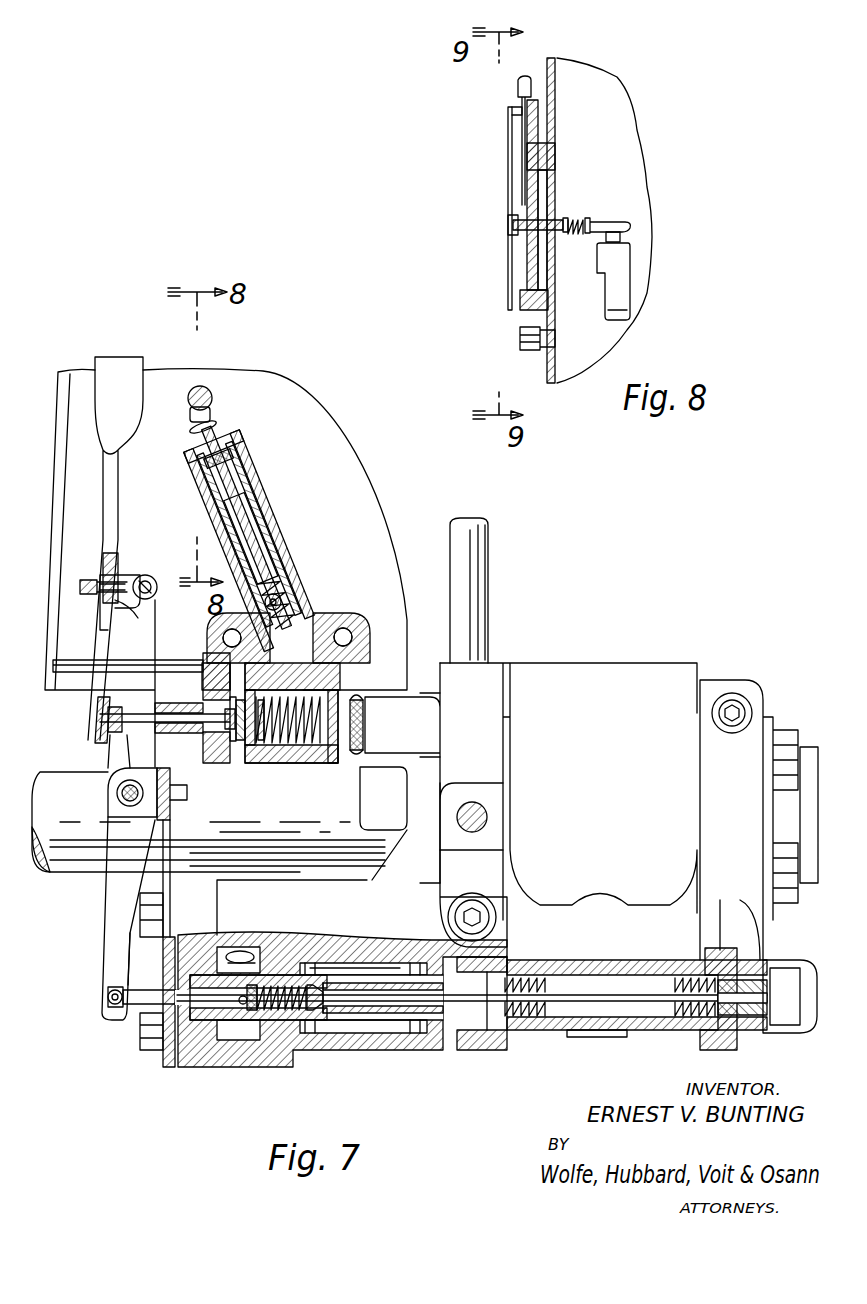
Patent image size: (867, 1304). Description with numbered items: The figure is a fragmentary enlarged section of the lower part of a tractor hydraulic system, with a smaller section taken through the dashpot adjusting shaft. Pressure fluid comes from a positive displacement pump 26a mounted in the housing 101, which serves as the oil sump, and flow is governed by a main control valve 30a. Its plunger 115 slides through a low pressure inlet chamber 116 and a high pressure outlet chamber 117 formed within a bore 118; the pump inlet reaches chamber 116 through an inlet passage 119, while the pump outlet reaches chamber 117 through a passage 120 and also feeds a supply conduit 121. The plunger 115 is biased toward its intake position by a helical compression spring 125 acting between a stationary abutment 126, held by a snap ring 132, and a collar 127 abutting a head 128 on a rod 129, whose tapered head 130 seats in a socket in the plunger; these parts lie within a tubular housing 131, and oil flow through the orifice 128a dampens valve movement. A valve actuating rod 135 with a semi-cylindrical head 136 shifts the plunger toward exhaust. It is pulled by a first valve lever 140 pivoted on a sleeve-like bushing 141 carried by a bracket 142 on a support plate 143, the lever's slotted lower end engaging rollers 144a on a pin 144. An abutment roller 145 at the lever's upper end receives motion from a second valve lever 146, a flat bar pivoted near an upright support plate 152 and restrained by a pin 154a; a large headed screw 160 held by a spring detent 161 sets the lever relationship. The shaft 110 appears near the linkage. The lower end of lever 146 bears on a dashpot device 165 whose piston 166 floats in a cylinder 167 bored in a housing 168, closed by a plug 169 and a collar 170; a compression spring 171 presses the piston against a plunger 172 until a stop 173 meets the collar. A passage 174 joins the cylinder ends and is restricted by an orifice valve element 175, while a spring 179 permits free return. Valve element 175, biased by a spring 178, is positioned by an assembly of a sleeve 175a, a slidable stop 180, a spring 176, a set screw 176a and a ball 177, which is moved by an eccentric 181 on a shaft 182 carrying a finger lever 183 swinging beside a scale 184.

In FIG. 7, the positive displacement pump 26a is at (620, 664).
In FIG. 7, the main control valve 30a is at (360, 1064).
In FIG. 8, the housing 101 is at (557, 80).
In FIG. 7, the shaft 110 is at (80, 866).
In FIG. 7, the plunger 115 is at (333, 1011).
In FIG. 7, the low pressure inlet chamber 116 is at (253, 1012).
In FIG. 7, the high pressure outlet chamber 117 is at (398, 1027).
In FIG. 7, the bore 118 is at (340, 968).
In FIG. 7, the inlet passage 119 is at (243, 953).
In FIG. 7, the passage 120 is at (397, 963).
In FIG. 7, the supply conduit 121 is at (483, 620).
In FIG. 7, the helical compression spring 125 is at (550, 978).
In FIG. 7, the stationary abutment 126 is at (487, 1014).
In FIG. 7, the collar 127 is at (720, 1014).
In FIG. 7, the head 128 is at (747, 1011).
In FIG. 7, the orifice 128a is at (807, 998).
In FIG. 7, the rod 129 is at (617, 1002).
In FIG. 7, the tapered head 130 is at (317, 986).
In FIG. 7, the tubular housing 131 is at (540, 1028).
In FIG. 7, the snap ring 132 is at (507, 960).
In FIG. 7, the valve actuating rod 135 is at (140, 998).
In FIG. 7, the semi-cylindrical head 136 is at (307, 990).
In FIG. 7, the first valve lever 140 is at (108, 934).
In FIG. 7, the sleeve-like bushing 141 is at (118, 801).
In FIG. 7, the bracket 142 is at (116, 781).
In FIG. 7, the support plate 143 is at (167, 858).
In FIG. 7, the pin 144 is at (109, 1000).
In FIG. 7, the rollers 144a is at (110, 1010).
In FIG. 7, the abutment roller 145 is at (150, 577).
In FIG. 7, the second valve lever 146 is at (127, 366).
In FIG. 7, the upright support plate 152 is at (378, 523).
In FIG. 7, the pin 154a is at (83, 668).
In FIG. 7, the large headed screw 160 is at (123, 567).
In FIG. 7, the spring detent 161 is at (141, 618).
In FIG. 7, the dashpot device 165 is at (287, 522).
In FIG. 8, the dashpot device 165 is at (641, 284).
In FIG. 7, the piston 166 is at (242, 737).
In FIG. 7, the cylinder 167 is at (290, 746).
In FIG. 7, the housing 168 is at (318, 622).
In FIG. 8, the housing 168 is at (625, 306).
In FIG. 7, the plug 169 is at (355, 752).
In FIG. 7, the collar 170 is at (197, 733).
In FIG. 7, the compression spring 171 is at (263, 738).
In FIG. 7, the plunger 172 is at (137, 713).
In FIG. 7, the stop 173 is at (216, 744).
In FIG. 7, the passage 174 is at (208, 648).
In FIG. 7, the orifice valve element 175 is at (303, 673).
In FIG. 7, the sleeve 175a is at (252, 489).
In FIG. 7, the spring 176 is at (262, 580).
In FIG. 7, the set screw 176a is at (250, 453).
In FIG. 7, the ball 177 is at (281, 606).
In FIG. 7, the spring 178 is at (330, 645).
In FIG. 7, the spring 179 is at (253, 705).
In FIG. 7, the slidable stop 180 is at (215, 424).
In FIG. 8, the slidable stop 180 is at (620, 238).
In FIG. 7, the eccentric 181 is at (212, 414).
In FIG. 8, the eccentric 181 is at (612, 225).
In FIG. 7, the shaft 182 is at (208, 390).
In FIG. 8, the shaft 182 is at (513, 226).
In FIG. 8, the finger lever 183 is at (518, 87).
In FIG. 8, the scale 184 is at (508, 145).